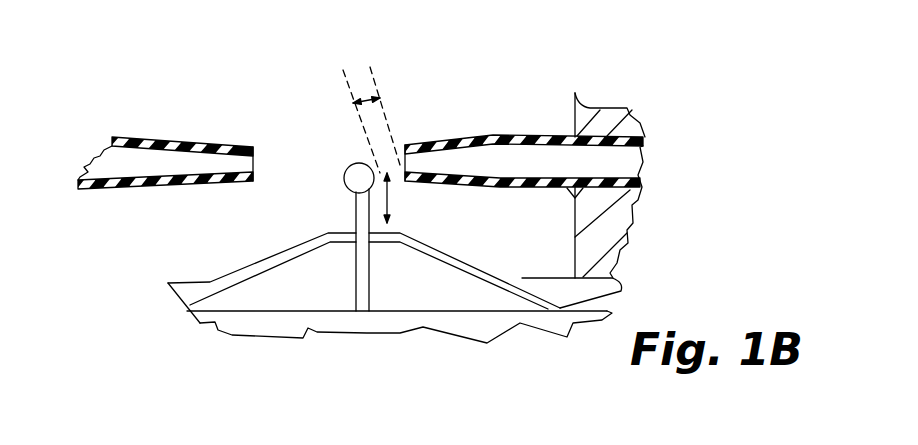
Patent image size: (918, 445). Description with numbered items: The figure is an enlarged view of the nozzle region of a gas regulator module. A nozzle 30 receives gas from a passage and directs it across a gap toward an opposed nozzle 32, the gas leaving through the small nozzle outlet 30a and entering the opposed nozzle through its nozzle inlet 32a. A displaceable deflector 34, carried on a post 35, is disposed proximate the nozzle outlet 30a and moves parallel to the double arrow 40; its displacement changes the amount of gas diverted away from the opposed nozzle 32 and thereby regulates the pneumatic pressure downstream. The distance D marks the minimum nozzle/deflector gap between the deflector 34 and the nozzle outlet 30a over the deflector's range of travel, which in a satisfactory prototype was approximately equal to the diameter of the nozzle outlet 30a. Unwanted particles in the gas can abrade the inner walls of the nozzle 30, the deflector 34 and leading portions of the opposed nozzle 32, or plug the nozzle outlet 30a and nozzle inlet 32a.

The nozzle 30 is at (485, 135).
The nozzle outlet 30a is at (402, 166).
The opposed nozzle 32 is at (133, 137).
The nozzle inlet 32a is at (255, 163).
The displaceable deflector 34 is at (344, 180).
The post 35 is at (366, 271).
The double arrow 40 is at (388, 200).
The minimum distance D is at (358, 97).